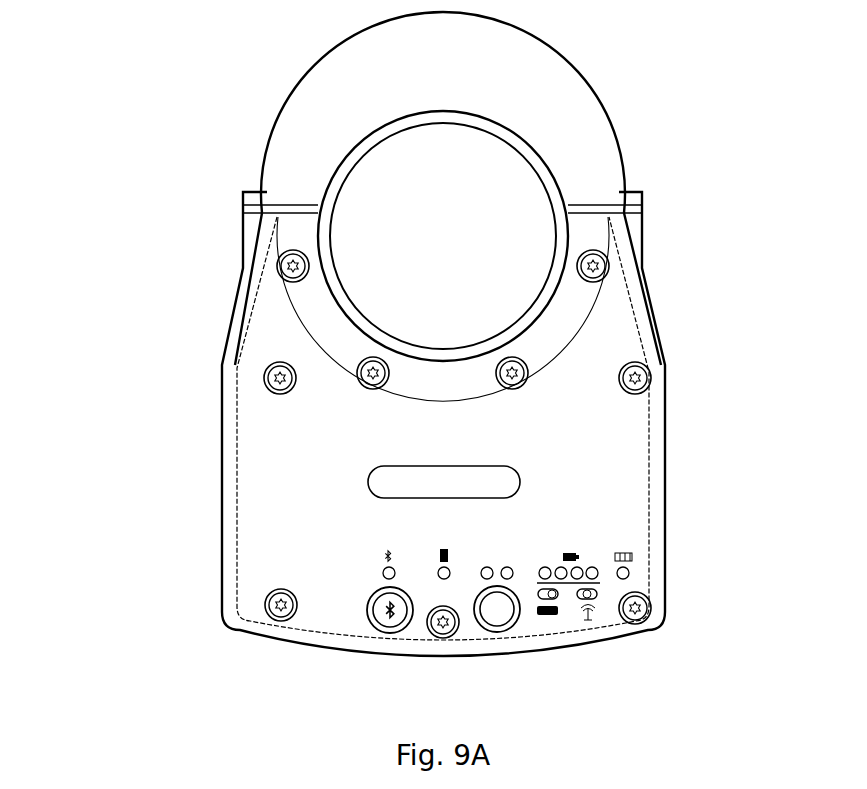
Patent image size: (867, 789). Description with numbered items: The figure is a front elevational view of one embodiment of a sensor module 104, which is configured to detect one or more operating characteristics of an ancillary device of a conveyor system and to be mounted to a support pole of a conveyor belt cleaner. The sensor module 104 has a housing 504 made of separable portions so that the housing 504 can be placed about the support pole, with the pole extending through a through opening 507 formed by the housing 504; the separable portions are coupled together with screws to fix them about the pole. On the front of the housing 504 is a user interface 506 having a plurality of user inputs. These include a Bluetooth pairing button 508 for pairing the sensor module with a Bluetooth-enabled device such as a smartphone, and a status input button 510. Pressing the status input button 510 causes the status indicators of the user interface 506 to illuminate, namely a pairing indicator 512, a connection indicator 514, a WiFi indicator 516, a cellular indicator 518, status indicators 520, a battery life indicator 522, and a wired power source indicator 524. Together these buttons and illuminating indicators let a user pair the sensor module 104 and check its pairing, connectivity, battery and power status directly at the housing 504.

The sensor module 104 is at (163, 141).
The housing 504 is at (590, 128).
The through opening 507 is at (377, 140).
The user interface 506 is at (362, 556).
The Bluetooth pairing button 508 is at (378, 630).
The status input button 510 is at (503, 632).
The pairing indicator 512 is at (389, 579).
The connection indicator 514 is at (444, 579).
The WiFi indicator 516 is at (556, 598).
The cellular indicator 518 is at (597, 597).
The status indicators 520 is at (512, 577).
The battery life indicator 522 is at (593, 567).
The wired power source indicator 524 is at (630, 572).